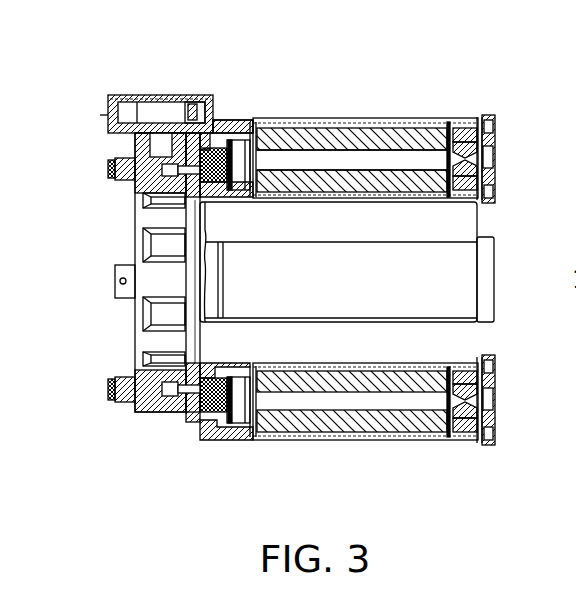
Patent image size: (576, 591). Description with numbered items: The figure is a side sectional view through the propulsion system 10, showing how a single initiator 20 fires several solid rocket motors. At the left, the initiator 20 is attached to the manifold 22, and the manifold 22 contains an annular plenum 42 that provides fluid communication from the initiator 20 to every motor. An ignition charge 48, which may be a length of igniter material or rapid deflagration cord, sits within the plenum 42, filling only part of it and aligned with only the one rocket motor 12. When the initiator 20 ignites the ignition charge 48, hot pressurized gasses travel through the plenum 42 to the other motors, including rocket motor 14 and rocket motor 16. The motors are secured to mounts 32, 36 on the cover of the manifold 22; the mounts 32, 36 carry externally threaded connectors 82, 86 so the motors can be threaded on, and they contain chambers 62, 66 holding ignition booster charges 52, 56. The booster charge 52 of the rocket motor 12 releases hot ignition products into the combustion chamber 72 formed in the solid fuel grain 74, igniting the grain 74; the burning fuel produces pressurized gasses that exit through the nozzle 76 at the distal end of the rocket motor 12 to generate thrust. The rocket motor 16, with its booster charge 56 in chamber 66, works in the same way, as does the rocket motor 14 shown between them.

The propulsion system 10 is at (147, 73).
The solid rocket motor 12 is at (411, 129).
The solid rocket motor 14 is at (455, 286).
The solid rocket motor 16 is at (398, 447).
The initiator 20 is at (100, 115).
The manifold 22 is at (138, 390).
The mount 32 is at (235, 140).
The mount 36 is at (200, 420).
The annular plenum 42 is at (170, 393).
The ignition charge 48 is at (162, 172).
The ignition booster charge 52 is at (240, 157).
The ignition booster charge 56 is at (256, 398).
The chamber 62 is at (245, 157).
The chamber 66 is at (244, 387).
The combustion chamber 72 is at (430, 162).
The solid fuel grain 74 is at (397, 180).
The nozzle 76 is at (487, 160).
The externally threaded connector 82 is at (218, 148).
The externally threaded connector 86 is at (238, 440).